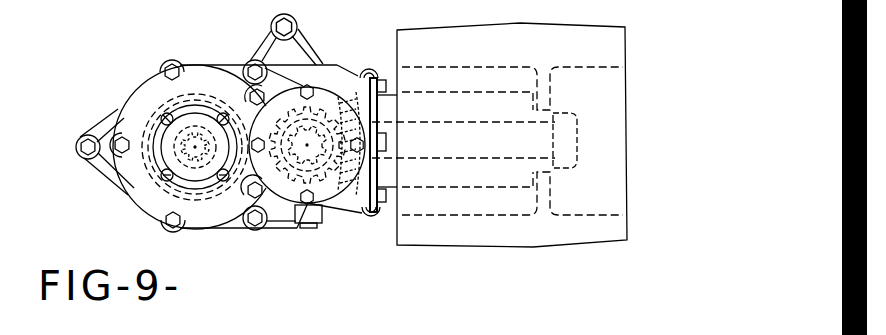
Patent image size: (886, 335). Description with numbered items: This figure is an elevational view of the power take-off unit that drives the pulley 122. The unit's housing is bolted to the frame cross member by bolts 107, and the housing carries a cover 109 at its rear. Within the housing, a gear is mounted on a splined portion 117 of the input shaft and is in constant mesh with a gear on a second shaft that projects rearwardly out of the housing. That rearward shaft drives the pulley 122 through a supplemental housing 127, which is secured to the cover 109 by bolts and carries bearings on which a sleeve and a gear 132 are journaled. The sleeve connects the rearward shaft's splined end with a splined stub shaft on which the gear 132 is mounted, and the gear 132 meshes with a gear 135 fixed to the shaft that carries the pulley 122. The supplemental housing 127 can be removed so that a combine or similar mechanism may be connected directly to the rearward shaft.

The bolts 107 is at (80, 143).
The cover 109 is at (145, 198).
The splined portion 117 is at (185, 138).
The pulley 122 is at (533, 243).
The supplemental housing 127 is at (253, 170).
The gear 132 is at (285, 178).
The gear 135 is at (380, 100).